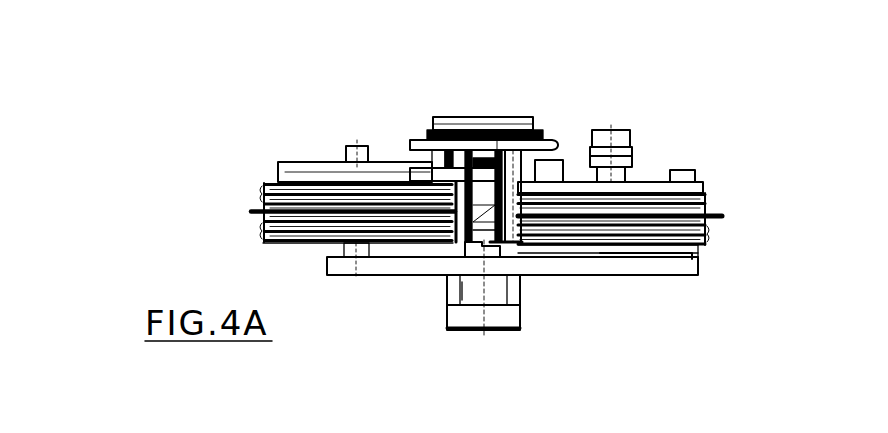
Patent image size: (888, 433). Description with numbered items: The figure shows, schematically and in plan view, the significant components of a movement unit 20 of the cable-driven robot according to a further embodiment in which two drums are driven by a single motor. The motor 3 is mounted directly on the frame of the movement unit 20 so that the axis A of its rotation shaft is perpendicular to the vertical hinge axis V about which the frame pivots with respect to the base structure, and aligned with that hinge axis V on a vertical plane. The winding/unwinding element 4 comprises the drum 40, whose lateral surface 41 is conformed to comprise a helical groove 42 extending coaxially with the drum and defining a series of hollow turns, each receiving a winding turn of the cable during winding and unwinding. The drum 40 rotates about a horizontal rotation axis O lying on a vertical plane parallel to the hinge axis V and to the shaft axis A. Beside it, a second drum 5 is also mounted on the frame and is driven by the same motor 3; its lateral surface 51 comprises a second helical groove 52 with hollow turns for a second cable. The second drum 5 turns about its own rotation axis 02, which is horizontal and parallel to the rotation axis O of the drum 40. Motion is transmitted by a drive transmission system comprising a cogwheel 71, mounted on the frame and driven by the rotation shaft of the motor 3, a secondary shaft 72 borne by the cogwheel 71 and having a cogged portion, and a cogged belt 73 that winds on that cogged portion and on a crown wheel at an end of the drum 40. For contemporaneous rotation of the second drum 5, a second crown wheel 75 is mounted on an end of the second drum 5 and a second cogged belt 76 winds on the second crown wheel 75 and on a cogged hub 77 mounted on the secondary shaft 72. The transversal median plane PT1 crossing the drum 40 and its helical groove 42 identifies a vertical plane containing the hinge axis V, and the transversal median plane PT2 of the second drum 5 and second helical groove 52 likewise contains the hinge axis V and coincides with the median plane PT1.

The movement unit 20 is at (583, 100).
The motor 3 is at (463, 300).
The winding/unwinding element 4 is at (713, 173).
The second drum 5 is at (263, 176).
The drum 40 is at (651, 182).
The lateral surface 41 is at (716, 202).
The helical groove 42 is at (714, 223).
The lateral surface 51 is at (243, 190).
The second helical groove 52 is at (254, 218).
The cogwheel 71 is at (438, 117).
The secondary shaft 72 is at (498, 228).
The cogged belt 73 is at (673, 248).
The second crown wheel 75 is at (287, 160).
The second cogged belt 76 is at (323, 175).
The cogged hub 77 is at (501, 130).
The transversal median plane PT1 is at (720, 214).
The transversal median plane PT2 is at (291, 216).
The rotation axis 02 is at (356, 277).
The horizontal rotation axis O is at (611, 285).
The axis of the rotation shaft A is at (486, 318).
The vertical hinge axis V is at (463, 233).